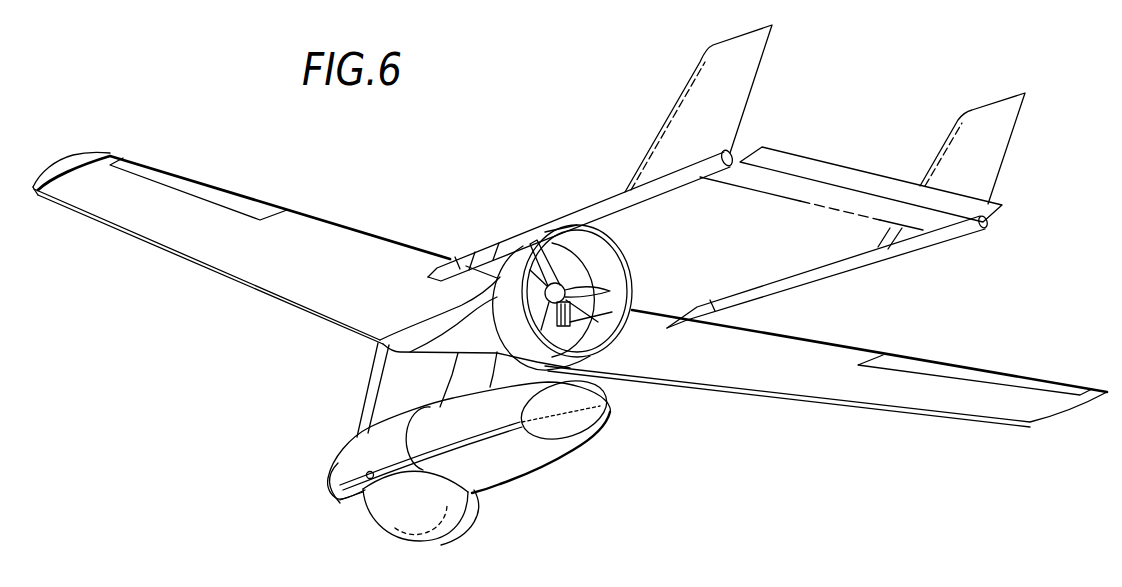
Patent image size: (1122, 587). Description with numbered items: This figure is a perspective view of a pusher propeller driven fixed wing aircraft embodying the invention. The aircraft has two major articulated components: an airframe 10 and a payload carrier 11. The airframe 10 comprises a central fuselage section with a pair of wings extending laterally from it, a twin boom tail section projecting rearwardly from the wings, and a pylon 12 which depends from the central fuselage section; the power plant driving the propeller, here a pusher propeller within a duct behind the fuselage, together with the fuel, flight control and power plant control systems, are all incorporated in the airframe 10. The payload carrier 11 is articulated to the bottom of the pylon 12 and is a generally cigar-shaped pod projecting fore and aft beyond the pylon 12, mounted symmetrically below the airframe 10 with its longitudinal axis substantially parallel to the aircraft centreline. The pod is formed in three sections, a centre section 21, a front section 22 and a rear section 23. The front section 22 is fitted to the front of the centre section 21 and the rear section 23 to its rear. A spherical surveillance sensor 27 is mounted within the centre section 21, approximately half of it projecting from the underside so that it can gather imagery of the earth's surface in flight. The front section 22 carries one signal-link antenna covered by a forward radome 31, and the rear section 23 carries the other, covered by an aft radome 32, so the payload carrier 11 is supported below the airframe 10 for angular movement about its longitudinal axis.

The airframe 10 is at (458, 249).
The payload carrier 11 is at (372, 440).
The pylon 12 is at (392, 391).
The centre section 21 is at (355, 462).
The front section 22 is at (352, 498).
The rear section 23 is at (512, 455).
The spherical surveillance sensor 27 is at (442, 503).
The forward radome 31 is at (325, 487).
The aft radome 32 is at (592, 408).